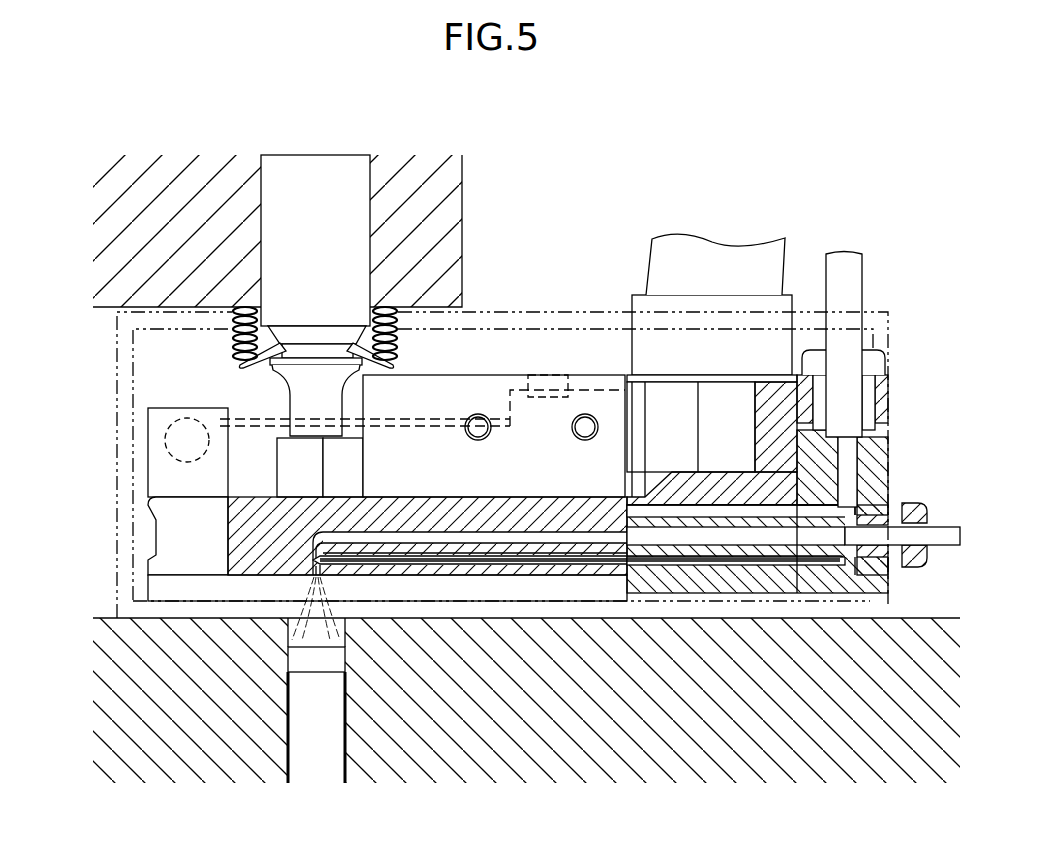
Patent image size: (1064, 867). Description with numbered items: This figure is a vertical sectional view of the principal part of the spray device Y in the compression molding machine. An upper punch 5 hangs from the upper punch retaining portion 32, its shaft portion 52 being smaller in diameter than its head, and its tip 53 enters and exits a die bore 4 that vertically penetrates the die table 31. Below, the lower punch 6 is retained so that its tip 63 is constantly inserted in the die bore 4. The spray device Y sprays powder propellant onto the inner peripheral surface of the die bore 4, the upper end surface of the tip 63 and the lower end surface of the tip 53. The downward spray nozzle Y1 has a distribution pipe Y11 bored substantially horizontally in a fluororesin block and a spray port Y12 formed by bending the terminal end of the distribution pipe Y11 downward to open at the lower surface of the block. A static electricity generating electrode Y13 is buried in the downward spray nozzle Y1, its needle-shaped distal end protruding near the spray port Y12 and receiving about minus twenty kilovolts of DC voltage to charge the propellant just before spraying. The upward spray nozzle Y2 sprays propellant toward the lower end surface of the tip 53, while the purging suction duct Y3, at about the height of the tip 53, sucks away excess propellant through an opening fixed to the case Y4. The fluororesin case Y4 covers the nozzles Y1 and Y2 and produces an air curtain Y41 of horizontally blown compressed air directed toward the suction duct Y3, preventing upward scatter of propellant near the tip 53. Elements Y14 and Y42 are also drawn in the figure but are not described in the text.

The upper punch 5 is at (313, 152).
The shaft portion 52 is at (295, 230).
The upper punch retaining portion 32 is at (462, 222).
The die table 31 is at (955, 695).
The tip 53 is at (290, 394).
The tip 63 is at (288, 658).
The die bore 4 is at (345, 704).
The lower punch 6 is at (318, 786).
The spray device Y is at (117, 462).
The downward spray nozzle Y1 is at (228, 540).
The distribution pipe Y11 is at (502, 525).
The spray port Y12 is at (312, 567).
The static electricity generating electrode Y13 is at (460, 567).
The supply tube Y14 is at (400, 577).
The upward spray nozzle Y2 is at (277, 467).
The purging suction duct Y3 is at (716, 272).
The case Y4 is at (573, 310).
The air curtain Y41 is at (187, 417).
The adjustment nut Y42 is at (888, 515).